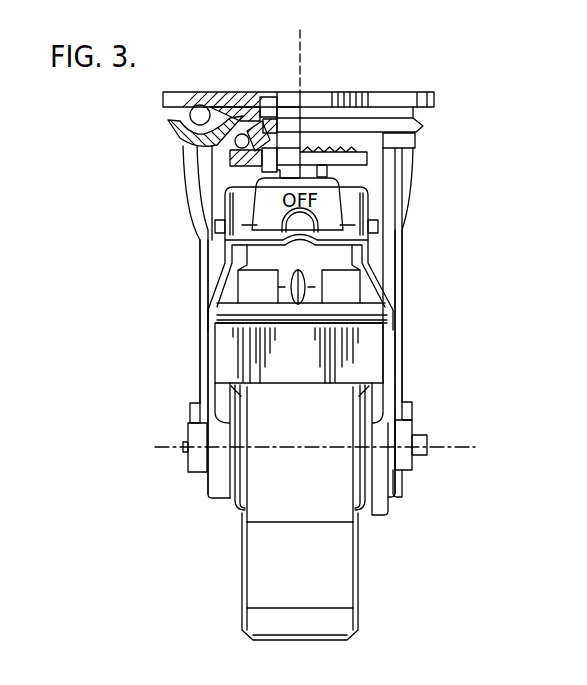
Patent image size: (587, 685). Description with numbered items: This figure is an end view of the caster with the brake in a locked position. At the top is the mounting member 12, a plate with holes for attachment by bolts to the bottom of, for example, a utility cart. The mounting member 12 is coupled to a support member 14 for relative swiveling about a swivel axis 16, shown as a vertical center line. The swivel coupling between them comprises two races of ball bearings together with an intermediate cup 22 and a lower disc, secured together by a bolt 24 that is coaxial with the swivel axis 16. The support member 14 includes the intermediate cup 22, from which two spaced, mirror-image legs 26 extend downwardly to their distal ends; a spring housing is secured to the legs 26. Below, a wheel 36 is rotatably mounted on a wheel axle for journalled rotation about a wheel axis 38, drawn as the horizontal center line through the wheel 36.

The mounting member 12 is at (377, 100).
The support member 14 is at (418, 179).
The swivel axis 16 is at (302, 40).
The intermediate cup 22 is at (178, 130).
The bolt 24 is at (272, 92).
The legs 26 is at (203, 258).
The wheel 36 is at (350, 596).
The wheel axis 38 is at (474, 448).